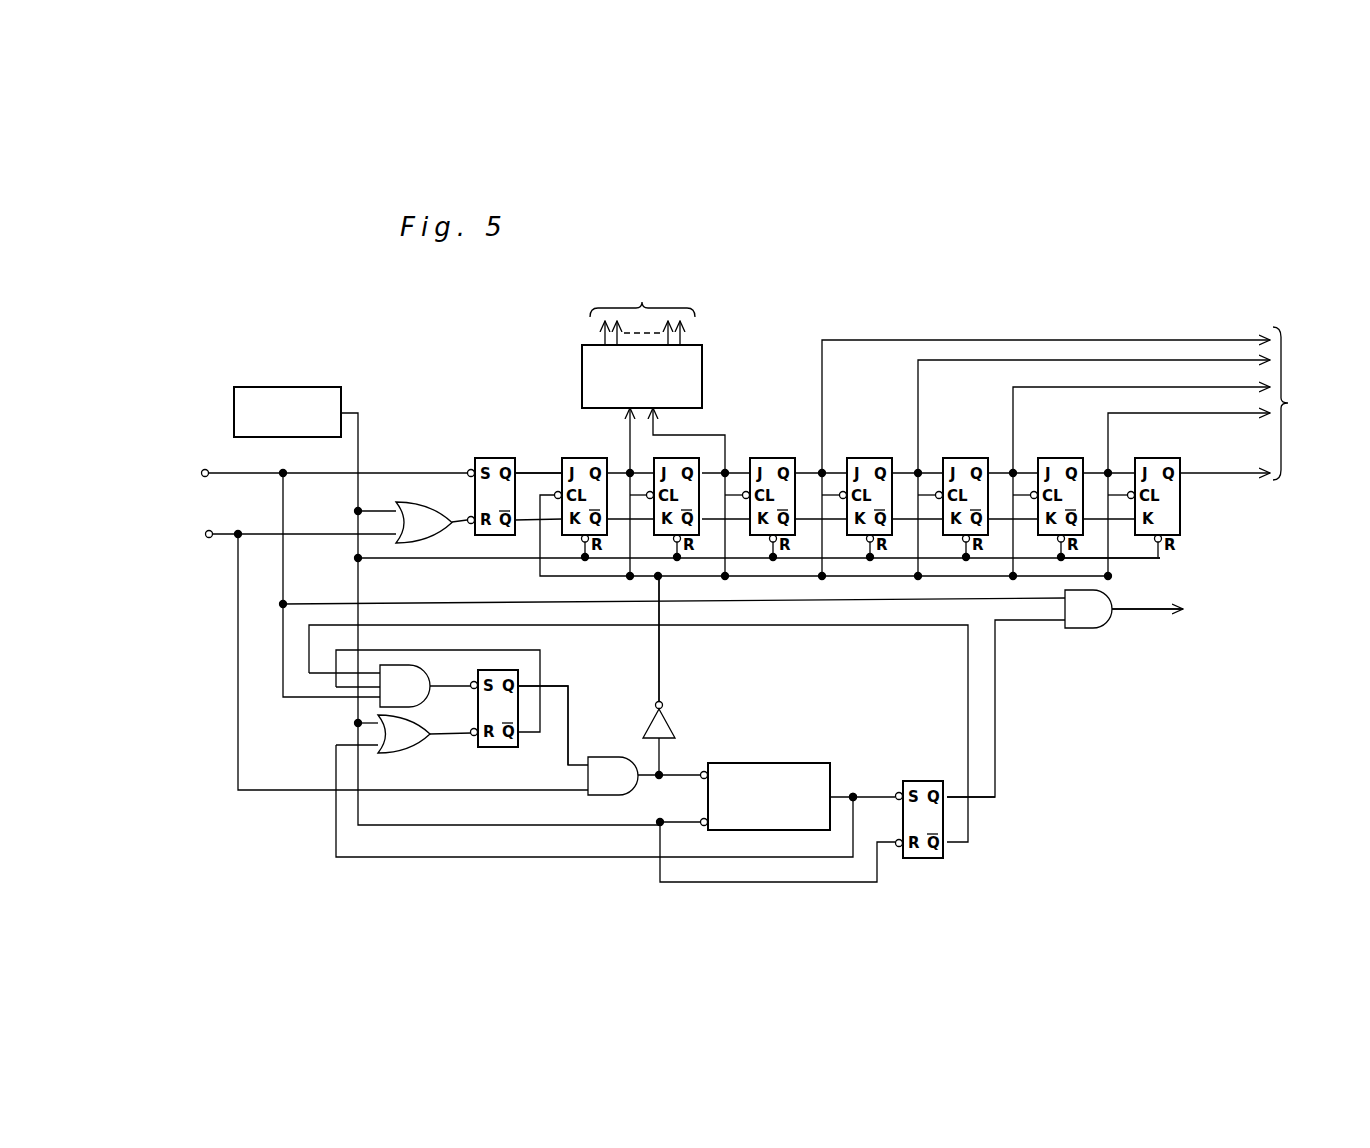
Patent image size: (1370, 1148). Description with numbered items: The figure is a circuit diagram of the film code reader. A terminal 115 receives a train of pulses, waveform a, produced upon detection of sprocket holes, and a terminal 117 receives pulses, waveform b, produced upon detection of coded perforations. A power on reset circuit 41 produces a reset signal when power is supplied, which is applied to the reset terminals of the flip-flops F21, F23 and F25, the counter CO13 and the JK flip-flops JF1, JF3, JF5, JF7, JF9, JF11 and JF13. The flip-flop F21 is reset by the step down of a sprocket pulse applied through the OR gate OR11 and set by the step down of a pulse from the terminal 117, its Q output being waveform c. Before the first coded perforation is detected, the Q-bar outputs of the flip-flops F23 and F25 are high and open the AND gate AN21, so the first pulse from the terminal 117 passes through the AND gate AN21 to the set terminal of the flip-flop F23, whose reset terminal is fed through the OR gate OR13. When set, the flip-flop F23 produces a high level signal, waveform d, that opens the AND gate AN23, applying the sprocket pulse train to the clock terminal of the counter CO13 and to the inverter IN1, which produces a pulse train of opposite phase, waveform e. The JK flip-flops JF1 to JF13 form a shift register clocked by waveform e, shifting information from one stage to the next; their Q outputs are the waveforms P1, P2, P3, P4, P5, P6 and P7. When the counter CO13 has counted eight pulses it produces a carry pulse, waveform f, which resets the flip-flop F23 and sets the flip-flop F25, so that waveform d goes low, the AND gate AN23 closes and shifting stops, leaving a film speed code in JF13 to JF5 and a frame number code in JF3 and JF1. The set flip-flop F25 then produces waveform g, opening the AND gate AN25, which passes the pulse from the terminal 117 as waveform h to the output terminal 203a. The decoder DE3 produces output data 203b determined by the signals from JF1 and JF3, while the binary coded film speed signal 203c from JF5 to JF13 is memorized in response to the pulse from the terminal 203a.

The power on reset circuit 41 is at (313, 387).
The terminal 117 is at (179, 476).
The terminal 115 is at (181, 537).
The OR gate OR11 is at (410, 503).
The flip-flop F21 is at (493, 462).
The JK flip-flop JF1 is at (585, 468).
The JK flip-flop JF3 is at (677, 462).
The JK flip-flop JF5 is at (777, 462).
The JK flip-flop JF7 is at (868, 462).
The JK flip-flop JF9 is at (968, 460).
The JK flip-flop JF11 is at (1063, 460).
The JK flip-flop JF13 is at (1170, 509).
The decoder DE3 is at (688, 367).
The decoder output data 203b is at (642, 307).
The binary coded signal terminals 203c is at (1311, 403).
The output terminal 203a is at (1183, 610).
The output waveform P1 is at (617, 453).
The output waveform P2 is at (742, 453).
The output waveform P3 is at (1045, 408).
The output waveform P4 is at (1093, 418).
The output waveform P5 is at (1140, 432).
The output waveform P6 is at (1188, 445).
The output waveform P7 is at (1225, 481).
The AND gate AN21 is at (388, 697).
The OR gate OR13 is at (398, 745).
The flip-flop F23 is at (495, 744).
The AND gate AN23 is at (607, 763).
The inverter IN1 is at (660, 727).
The counter CO13 is at (780, 773).
The flip-flop F25 is at (923, 852).
The AND gate AN25 is at (1087, 620).
The waveform a is at (236, 522).
The waveform b is at (287, 460).
The waveform c is at (538, 459).
The waveform d is at (544, 710).
The waveform e is at (668, 638).
The waveform f is at (851, 781).
The waveform g is at (981, 788).
The waveform h is at (1147, 595).